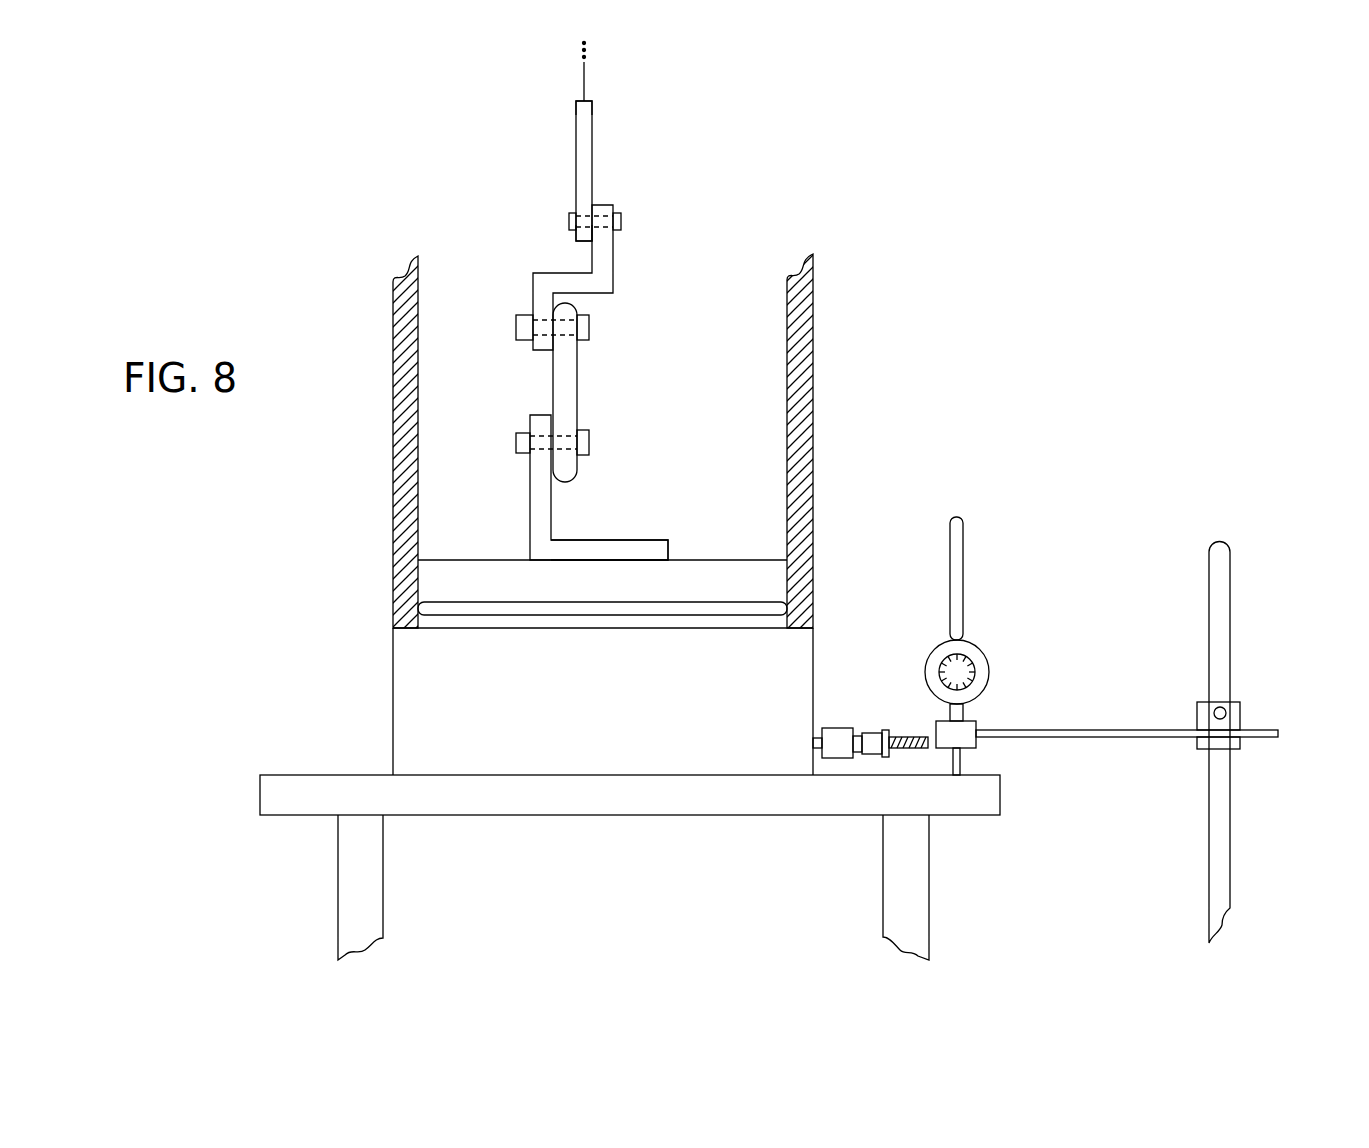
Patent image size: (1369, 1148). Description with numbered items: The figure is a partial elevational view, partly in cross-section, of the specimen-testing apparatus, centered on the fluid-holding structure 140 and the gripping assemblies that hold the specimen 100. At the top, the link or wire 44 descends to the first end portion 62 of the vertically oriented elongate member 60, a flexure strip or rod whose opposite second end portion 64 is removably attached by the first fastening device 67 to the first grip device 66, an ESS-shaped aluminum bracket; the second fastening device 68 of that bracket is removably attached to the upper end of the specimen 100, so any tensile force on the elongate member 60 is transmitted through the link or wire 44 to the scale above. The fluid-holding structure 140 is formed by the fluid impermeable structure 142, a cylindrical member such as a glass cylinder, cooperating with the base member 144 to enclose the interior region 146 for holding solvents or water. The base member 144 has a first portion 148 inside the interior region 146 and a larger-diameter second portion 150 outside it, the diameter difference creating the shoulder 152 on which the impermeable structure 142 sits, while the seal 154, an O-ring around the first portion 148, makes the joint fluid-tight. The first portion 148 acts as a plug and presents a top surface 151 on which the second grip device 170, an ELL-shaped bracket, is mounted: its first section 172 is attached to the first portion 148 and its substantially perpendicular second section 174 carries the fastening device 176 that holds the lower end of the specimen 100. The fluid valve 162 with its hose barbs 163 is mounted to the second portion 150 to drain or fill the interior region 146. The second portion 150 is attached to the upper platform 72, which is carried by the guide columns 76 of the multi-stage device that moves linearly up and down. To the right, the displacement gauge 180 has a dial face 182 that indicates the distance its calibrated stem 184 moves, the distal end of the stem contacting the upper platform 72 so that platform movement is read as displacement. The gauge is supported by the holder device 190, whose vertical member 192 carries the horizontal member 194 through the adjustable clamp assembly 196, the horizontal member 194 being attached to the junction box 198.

The link or wire 44 is at (582, 86).
The elongate member 60 is at (576, 157).
The first end portion 62 is at (593, 106).
The second end portion 64 is at (576, 236).
The first grip device 66 is at (613, 258).
The first fastening device 67 is at (622, 222).
The second fastening device 68 is at (590, 328).
The specimen 100 is at (577, 383).
The fluid-holding structure 140 is at (885, 399).
The fluid impermeable structure 142 is at (395, 410).
The base member 144 is at (542, 701).
The interior region 146 is at (569, 421).
The first portion 148 is at (442, 580).
The second portion 150 is at (393, 742).
The top surface 151 is at (740, 560).
The shoulder 152 is at (437, 628).
The seal 154 is at (513, 608).
The fluid valve 162 is at (833, 728).
The hose barbs 163 is at (905, 733).
The second grip device 170 is at (574, 485).
The first section 172 is at (668, 550).
The second section 174 is at (530, 416).
The fastening device 176 is at (516, 447).
The displacement gauge 180 is at (994, 648).
The dial face 182 is at (963, 668).
The calibrated stem 184 is at (960, 757).
The displacement gauge holder device 190 is at (1127, 743).
The vertical member 192 is at (1209, 565).
The horizontal member 194 is at (1097, 733).
The clamp assembly 196 is at (1204, 705).
The junction box 198 is at (976, 722).
The upper platform 72 is at (260, 795).
The guide columns 76 is at (338, 900).